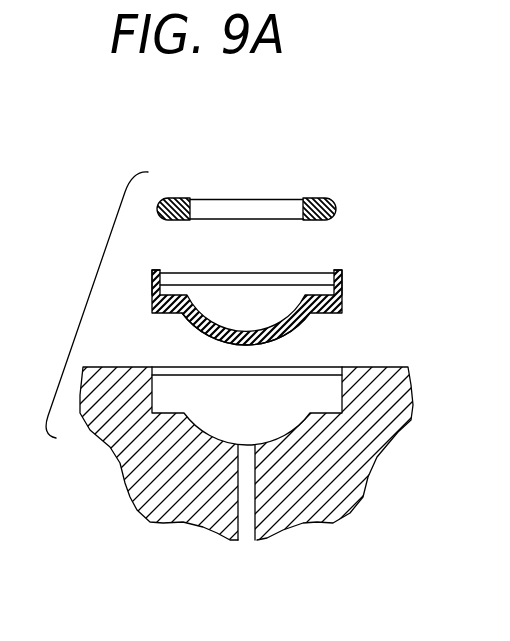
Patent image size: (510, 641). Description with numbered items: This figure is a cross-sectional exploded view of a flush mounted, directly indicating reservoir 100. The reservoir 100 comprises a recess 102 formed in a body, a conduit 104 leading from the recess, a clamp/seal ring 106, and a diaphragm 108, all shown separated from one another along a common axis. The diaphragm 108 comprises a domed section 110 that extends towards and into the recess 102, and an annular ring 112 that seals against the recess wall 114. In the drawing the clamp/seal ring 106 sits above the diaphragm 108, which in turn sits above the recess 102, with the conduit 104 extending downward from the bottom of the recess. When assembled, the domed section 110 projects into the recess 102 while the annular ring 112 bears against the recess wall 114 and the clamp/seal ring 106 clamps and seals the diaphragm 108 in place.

The directly indicating reservoir 100 is at (94, 279).
The recess 102 is at (295, 392).
The conduit 104 is at (247, 533).
The clamp/seal ring 106 is at (336, 210).
The diaphragm 108 is at (358, 287).
The domed section 110 is at (298, 329).
The annular ring 112 is at (343, 276).
The recess wall 114 is at (157, 395).